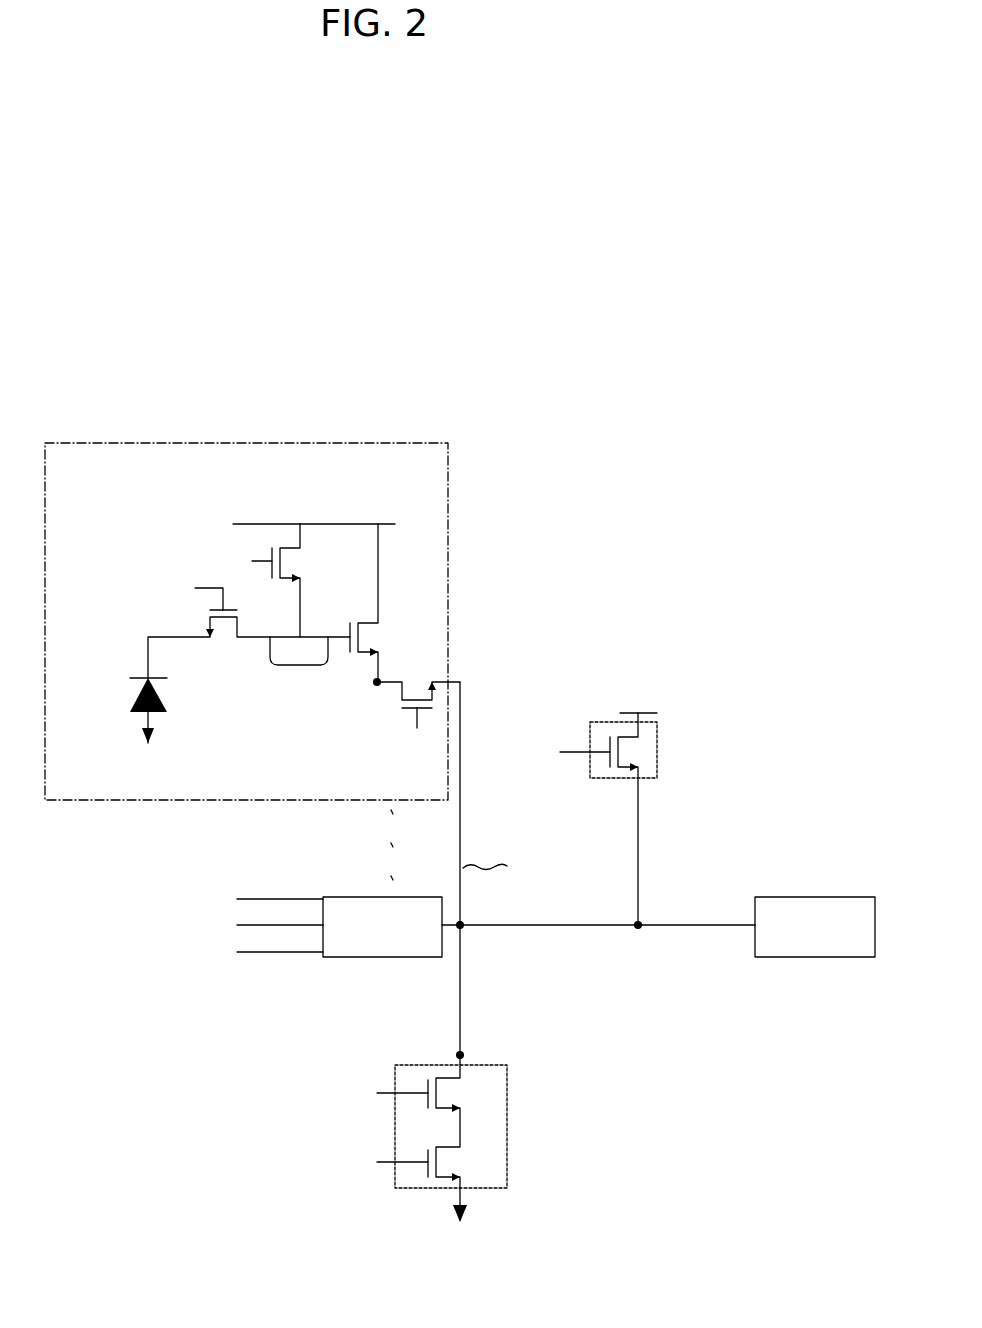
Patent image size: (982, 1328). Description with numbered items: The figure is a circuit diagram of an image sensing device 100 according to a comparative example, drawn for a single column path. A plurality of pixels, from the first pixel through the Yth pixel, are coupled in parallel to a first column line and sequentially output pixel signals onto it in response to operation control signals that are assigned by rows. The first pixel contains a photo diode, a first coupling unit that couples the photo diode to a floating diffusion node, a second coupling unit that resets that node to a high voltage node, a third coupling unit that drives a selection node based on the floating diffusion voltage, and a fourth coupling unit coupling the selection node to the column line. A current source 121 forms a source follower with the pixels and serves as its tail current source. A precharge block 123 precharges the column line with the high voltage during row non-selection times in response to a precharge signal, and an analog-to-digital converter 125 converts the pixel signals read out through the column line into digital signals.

The image sensing device 100 is at (80, 336).
The current source 121 is at (507, 1125).
The precharge block 123 is at (657, 748).
The analog-to-digital converter 125 is at (825, 896).